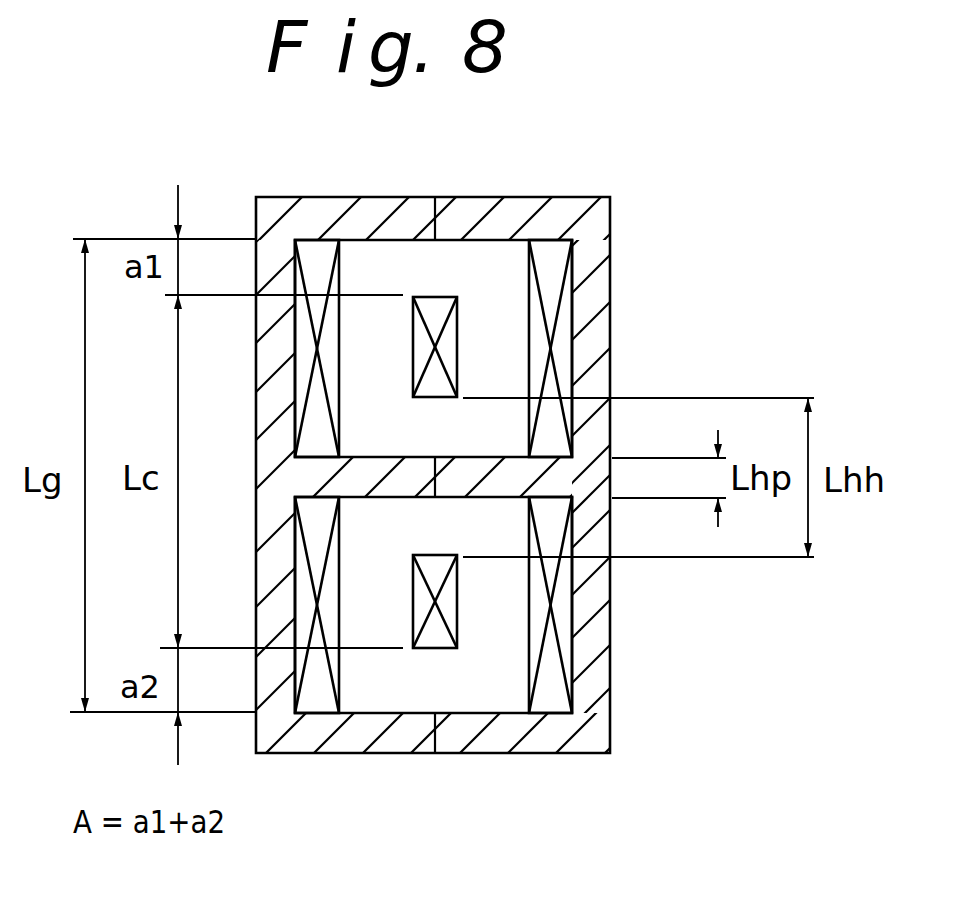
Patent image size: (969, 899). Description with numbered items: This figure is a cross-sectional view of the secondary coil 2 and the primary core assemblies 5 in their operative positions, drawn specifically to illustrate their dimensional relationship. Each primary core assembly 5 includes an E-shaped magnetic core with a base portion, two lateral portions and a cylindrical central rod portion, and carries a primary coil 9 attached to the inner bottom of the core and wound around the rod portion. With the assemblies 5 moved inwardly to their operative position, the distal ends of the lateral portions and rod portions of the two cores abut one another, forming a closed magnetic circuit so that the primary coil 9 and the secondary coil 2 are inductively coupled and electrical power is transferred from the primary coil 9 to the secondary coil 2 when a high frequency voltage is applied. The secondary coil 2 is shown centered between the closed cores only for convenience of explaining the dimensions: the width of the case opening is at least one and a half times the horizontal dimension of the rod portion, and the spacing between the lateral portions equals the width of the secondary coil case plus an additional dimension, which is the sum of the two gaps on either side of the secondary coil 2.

The secondary coil 2 is at (440, 287).
The primary core assembly 5 is at (616, 280).
The primary coil 9 is at (318, 240).